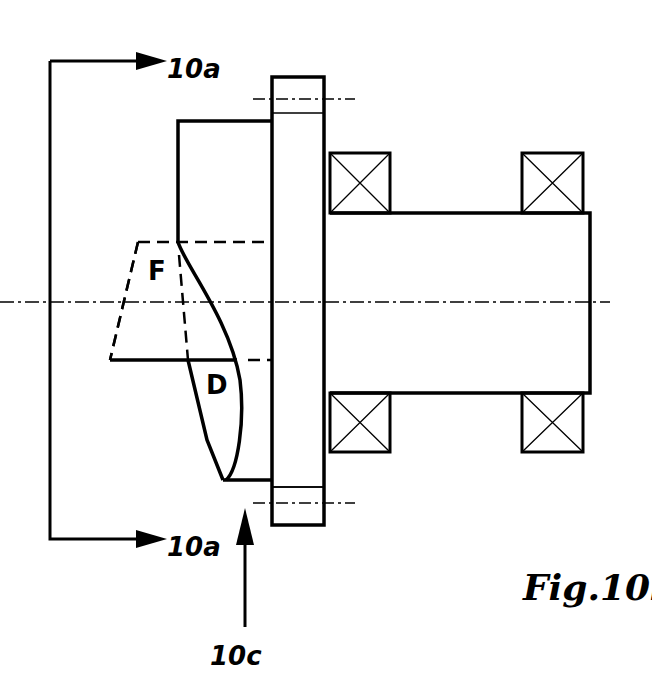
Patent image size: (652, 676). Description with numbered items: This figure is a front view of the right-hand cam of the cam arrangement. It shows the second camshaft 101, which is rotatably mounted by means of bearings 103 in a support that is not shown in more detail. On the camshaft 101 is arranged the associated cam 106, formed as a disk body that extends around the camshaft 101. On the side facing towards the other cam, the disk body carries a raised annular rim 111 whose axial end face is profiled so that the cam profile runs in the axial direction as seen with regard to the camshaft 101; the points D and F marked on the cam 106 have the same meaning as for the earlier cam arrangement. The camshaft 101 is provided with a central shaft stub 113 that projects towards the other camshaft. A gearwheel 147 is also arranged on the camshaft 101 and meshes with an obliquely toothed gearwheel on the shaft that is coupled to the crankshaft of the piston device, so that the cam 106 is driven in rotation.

The second camshaft 101 is at (525, 343).
The bearing 103 is at (378, 185).
The cam 106 is at (218, 150).
The raised annular rim 111 is at (293, 420).
The shaft stub 113 is at (151, 313).
The gearwheel 147 is at (298, 513).